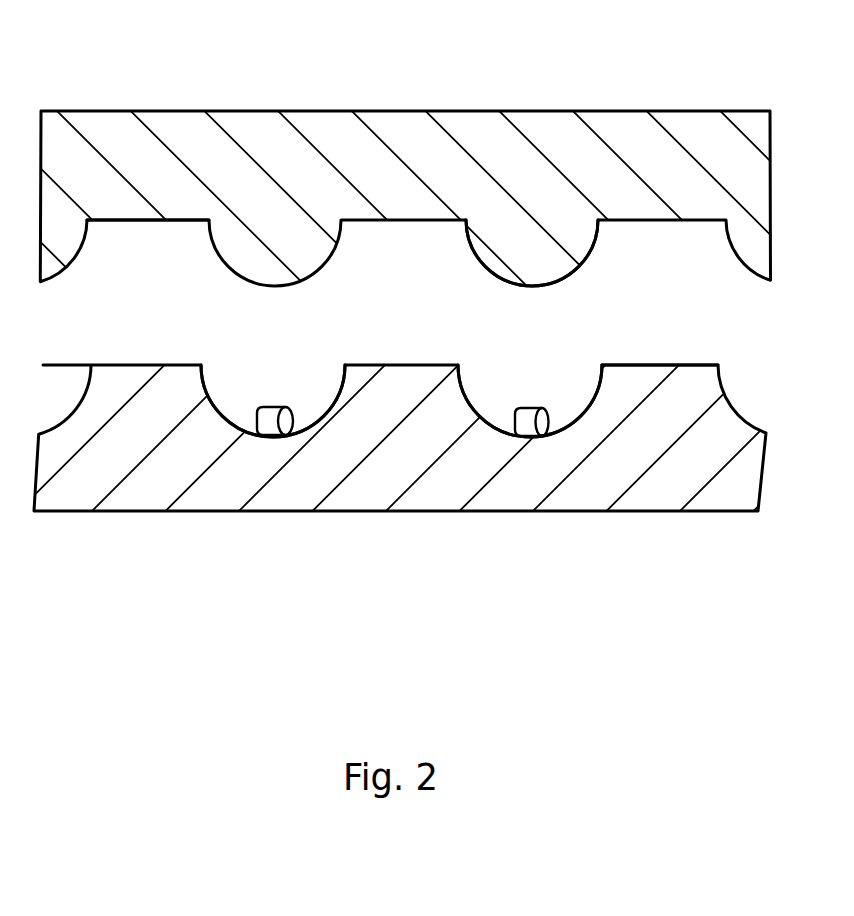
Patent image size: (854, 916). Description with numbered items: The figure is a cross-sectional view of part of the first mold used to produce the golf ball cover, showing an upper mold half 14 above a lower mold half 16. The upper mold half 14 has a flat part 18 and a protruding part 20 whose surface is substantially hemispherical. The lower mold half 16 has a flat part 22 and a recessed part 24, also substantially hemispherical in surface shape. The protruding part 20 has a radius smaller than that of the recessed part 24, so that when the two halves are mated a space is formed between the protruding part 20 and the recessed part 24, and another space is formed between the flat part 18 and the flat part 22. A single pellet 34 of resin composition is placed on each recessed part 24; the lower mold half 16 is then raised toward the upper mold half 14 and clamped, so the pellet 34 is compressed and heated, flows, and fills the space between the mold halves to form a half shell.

The upper mold half 14 is at (332, 130).
The lower mold half 16 is at (363, 490).
The flat part 18 is at (133, 222).
The protruding part 20 is at (539, 262).
The flat part 22 is at (658, 365).
The recessed part 24 is at (222, 415).
The pellet 34 is at (530, 415).